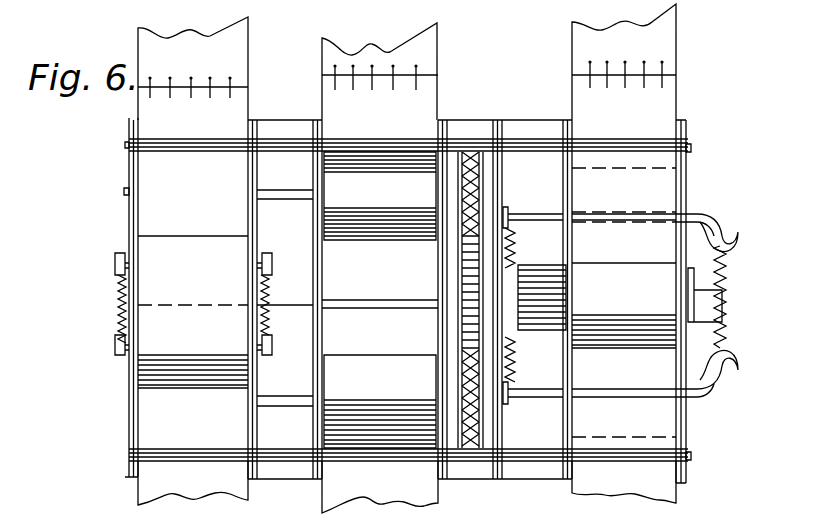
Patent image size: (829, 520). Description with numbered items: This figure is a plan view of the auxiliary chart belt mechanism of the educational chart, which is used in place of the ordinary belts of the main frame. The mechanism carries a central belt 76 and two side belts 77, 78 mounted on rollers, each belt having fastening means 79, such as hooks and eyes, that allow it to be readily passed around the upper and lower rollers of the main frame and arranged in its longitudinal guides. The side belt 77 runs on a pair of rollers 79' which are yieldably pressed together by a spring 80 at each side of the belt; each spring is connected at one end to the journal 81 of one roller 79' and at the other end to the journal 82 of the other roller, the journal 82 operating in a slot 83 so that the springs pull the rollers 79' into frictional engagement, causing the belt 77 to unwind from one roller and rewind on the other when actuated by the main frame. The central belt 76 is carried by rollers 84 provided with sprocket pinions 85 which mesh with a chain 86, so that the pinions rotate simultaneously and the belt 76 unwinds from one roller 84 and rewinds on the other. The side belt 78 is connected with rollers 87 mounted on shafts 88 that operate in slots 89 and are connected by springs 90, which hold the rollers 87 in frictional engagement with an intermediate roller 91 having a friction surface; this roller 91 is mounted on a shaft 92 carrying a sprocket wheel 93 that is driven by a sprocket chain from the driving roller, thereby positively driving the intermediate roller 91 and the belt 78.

The central belt 76 is at (422, 53).
The side belt 77 is at (228, 71).
The side belt 78 is at (578, 67).
The fastening means 79 is at (387, 207).
The roller 79' is at (193, 227).
The spring 80 is at (118, 286).
The journal 81 is at (115, 258).
The journal 82 is at (125, 356).
The slot 83 is at (108, 333).
The roller 84 is at (380, 196).
The sprocket pinion 85 is at (460, 388).
The chain 86 is at (458, 325).
The roller 87 is at (655, 195).
The shaft 88 is at (541, 214).
The slot 89 is at (690, 208).
The spring 90 is at (727, 272).
The intermediate roller 91 is at (625, 332).
The shaft 92 is at (722, 320).
The sprocket wheel 93 is at (536, 296).